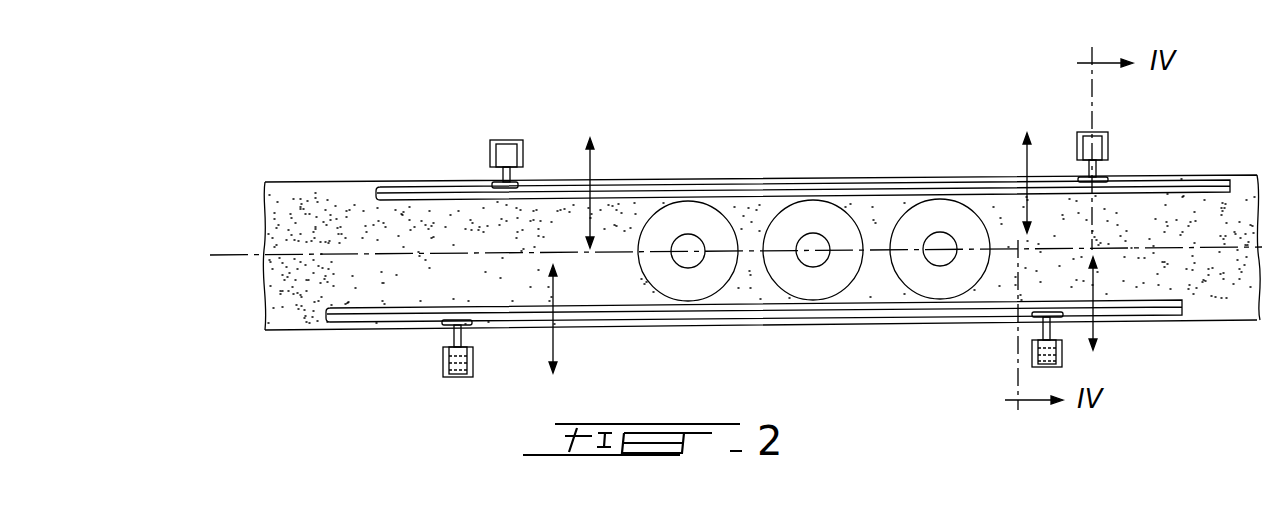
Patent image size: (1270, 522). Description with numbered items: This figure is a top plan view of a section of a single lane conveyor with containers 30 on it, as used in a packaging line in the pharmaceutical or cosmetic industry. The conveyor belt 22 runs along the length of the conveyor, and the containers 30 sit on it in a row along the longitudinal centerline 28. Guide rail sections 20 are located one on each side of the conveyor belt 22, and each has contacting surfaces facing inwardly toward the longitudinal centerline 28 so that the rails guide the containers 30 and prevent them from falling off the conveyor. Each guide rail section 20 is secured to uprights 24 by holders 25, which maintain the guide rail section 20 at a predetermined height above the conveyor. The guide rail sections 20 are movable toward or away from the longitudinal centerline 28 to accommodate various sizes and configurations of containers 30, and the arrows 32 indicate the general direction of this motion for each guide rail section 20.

The guide rail section 20 is at (732, 197).
The conveyor belt 22 is at (307, 288).
The upright 24 is at (507, 140).
The holder 25 is at (490, 170).
The longitudinal centerline 28 is at (238, 258).
The container 30 is at (810, 207).
The arrow 32 is at (592, 158).